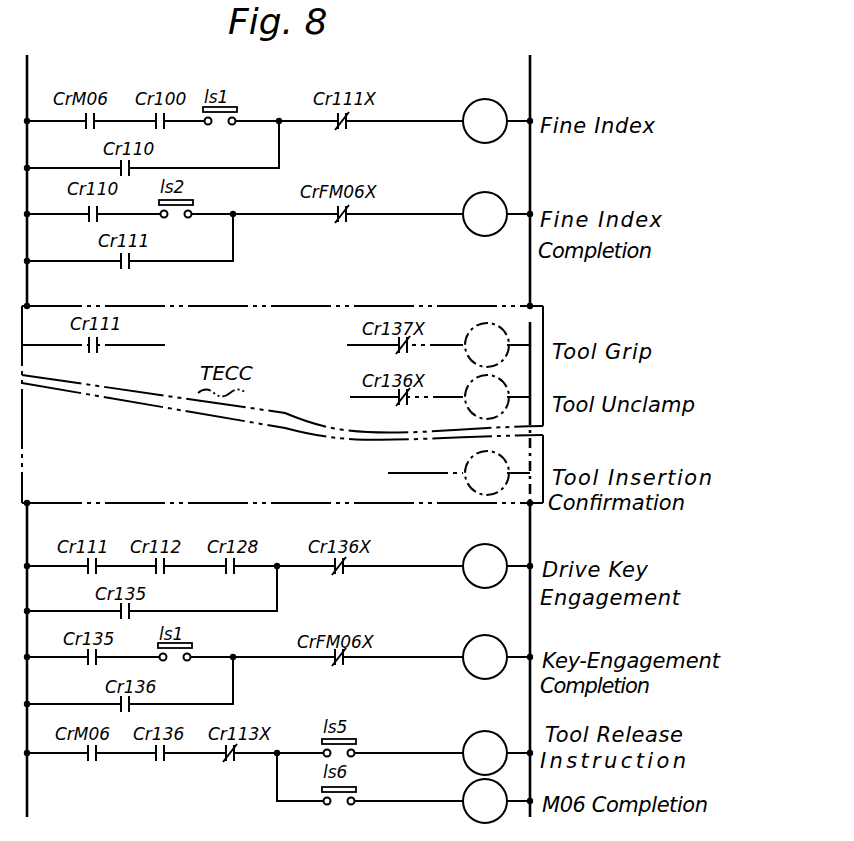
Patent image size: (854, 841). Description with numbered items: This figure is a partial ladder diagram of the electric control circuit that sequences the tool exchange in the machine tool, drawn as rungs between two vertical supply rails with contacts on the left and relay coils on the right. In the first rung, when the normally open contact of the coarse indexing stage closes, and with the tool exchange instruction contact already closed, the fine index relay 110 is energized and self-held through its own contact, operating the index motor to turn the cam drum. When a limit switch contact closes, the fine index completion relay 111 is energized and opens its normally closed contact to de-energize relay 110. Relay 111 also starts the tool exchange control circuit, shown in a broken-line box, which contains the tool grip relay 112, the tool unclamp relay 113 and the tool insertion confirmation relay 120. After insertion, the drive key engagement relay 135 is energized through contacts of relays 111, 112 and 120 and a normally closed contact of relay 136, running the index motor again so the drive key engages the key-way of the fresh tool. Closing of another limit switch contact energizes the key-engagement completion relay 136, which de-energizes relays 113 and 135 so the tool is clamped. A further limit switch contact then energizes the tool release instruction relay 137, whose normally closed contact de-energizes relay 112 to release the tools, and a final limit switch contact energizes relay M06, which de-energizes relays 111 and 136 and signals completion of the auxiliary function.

The magnetic relay CR110 110 is at (485, 121).
The magnetic relay CR111 111 is at (485, 214).
The magnetic relay CR112 112 is at (487, 345).
The magnetic relay CR113 113 is at (487, 397).
The magnetic relay CR120 120 is at (487, 473).
The magnetic relay CR135 135 is at (485, 566).
The magnetic relay CR136 136 is at (485, 657).
The magnetic relay CR137 137 is at (485, 753).
The magnetic relay CRFM06 M06 is at (485, 801).